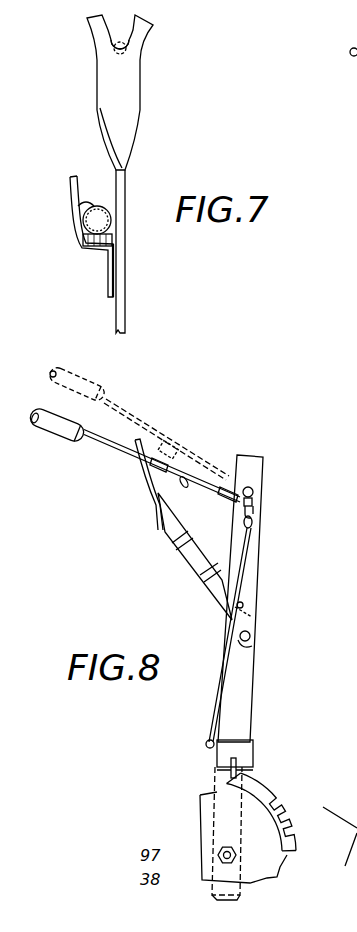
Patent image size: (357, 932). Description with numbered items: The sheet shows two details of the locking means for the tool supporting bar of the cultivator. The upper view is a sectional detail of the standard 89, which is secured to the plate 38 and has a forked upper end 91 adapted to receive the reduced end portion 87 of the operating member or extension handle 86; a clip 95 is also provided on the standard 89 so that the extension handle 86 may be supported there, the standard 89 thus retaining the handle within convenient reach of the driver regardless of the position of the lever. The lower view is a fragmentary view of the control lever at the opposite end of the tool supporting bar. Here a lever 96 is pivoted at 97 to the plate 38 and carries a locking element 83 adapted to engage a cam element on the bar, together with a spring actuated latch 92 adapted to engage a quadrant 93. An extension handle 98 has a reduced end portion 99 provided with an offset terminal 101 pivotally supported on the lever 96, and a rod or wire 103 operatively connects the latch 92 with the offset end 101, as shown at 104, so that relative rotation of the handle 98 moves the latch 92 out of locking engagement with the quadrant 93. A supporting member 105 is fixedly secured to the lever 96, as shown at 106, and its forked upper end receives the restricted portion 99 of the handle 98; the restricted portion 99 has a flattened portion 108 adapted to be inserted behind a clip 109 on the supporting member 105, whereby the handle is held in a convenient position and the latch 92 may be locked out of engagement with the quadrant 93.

In FIG. 7, the forked upper end 91 is at (120, 32).
In FIG. 7, the reduced end portion 87 is at (127, 48).
In FIG. 7, the standard 89 is at (121, 316).
In FIG. 7, the extension handle 86 is at (85, 210).
In FIG. 7, the clip 95 is at (73, 197).
In FIG. 8, the extension handle 98 is at (93, 383).
In FIG. 8, the reduced end portion 99 is at (103, 442).
In FIG. 8, the flattened portion 108 is at (185, 479).
In FIG. 8, the supporting member 105 is at (170, 524).
In FIG. 8, the clip 109 is at (187, 548).
In FIG. 8, the lever 96 is at (258, 580).
In FIG. 8, the offset terminal 101 is at (256, 503).
In FIG. 8, the connection of rod to offset end 104 is at (254, 513).
In FIG. 8, the rod or wire 103 is at (221, 689).
In FIG. 8, the fixed securing point 106 is at (252, 618).
In FIG. 8, the spring actuated latch 92 is at (240, 758).
In FIG. 8, the quadrant 93 is at (273, 782).
In FIG. 8, the plate 38 is at (203, 865).
In FIG. 8, the pivot 97 is at (218, 855).
In FIG. 8, the locking element 83 is at (350, 858).